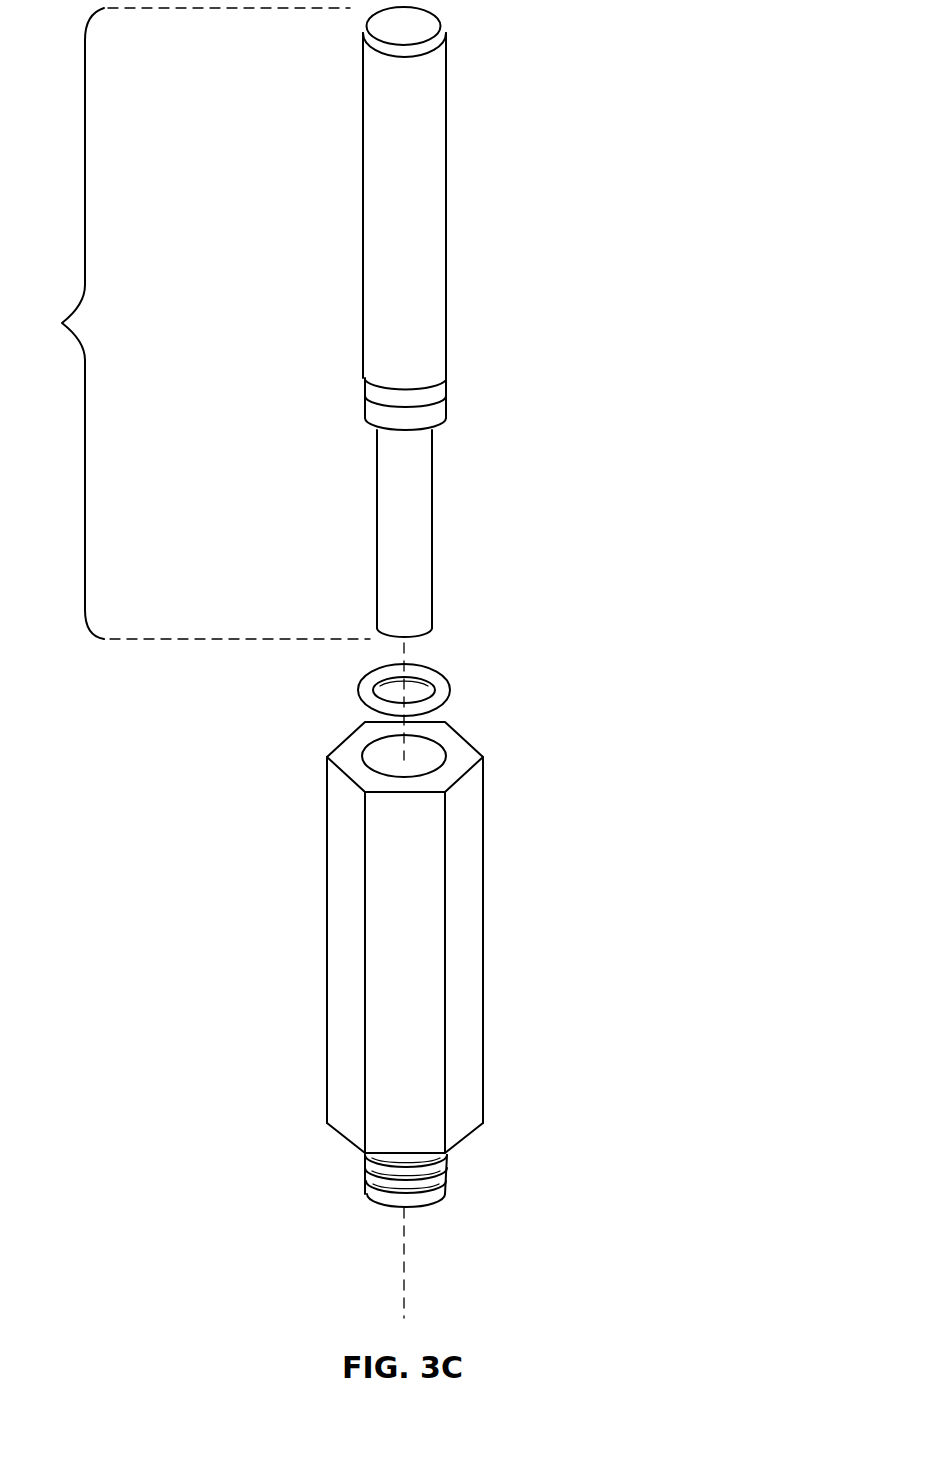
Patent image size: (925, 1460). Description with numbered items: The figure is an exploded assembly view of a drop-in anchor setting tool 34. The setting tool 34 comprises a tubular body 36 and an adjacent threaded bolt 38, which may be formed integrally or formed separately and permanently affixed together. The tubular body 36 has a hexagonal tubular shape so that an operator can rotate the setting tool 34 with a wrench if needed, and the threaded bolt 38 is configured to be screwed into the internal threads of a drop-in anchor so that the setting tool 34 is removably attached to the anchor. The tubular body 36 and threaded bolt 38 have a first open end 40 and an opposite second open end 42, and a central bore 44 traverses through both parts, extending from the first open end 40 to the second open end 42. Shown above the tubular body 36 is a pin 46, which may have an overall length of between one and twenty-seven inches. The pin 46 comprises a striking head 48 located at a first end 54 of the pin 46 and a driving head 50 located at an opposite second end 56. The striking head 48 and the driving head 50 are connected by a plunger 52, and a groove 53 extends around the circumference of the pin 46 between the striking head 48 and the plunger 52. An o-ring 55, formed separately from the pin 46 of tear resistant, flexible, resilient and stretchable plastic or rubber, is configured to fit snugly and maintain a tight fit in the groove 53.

The drop-in anchor setting tool 34 is at (582, 281).
The tubular body 36 is at (472, 900).
The threaded bolt 38 is at (447, 1173).
The first open end 40 is at (386, 762).
The second open end 42 is at (380, 1218).
The central bore 44 is at (424, 757).
The pin 46 is at (271, 323).
The striking head 48 is at (438, 163).
The driving head 50 is at (432, 532).
The plunger 52 is at (435, 410).
The groove 53 is at (366, 390).
The first end 54 is at (198, 66).
The o-ring 55 is at (452, 690).
The second end 56 is at (552, 573).